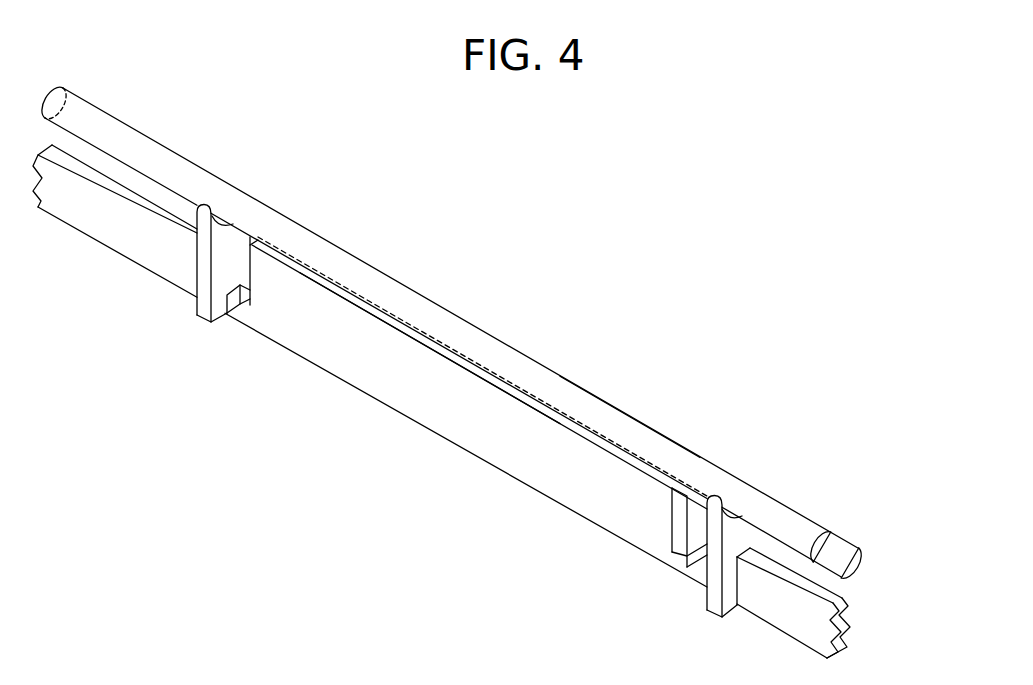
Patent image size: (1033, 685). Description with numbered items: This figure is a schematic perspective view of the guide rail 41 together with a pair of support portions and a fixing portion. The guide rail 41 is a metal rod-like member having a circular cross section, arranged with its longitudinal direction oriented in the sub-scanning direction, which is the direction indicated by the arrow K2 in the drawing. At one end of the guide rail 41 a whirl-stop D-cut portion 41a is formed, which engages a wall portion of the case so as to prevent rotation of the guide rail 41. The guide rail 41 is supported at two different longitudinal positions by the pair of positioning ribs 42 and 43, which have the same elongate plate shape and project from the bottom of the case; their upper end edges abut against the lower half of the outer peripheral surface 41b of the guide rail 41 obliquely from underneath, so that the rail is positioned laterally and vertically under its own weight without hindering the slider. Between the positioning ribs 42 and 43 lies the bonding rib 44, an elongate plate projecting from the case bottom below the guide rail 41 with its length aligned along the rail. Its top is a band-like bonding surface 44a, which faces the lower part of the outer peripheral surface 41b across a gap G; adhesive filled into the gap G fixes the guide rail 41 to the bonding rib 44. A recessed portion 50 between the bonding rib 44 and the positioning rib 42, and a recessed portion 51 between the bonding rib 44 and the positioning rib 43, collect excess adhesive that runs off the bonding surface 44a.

The guide rail 41 is at (492, 331).
The D-cut portion 41a is at (841, 556).
The outer peripheral surface 41b is at (623, 428).
The positioning rib 42 is at (228, 255).
The positioning rib 43 is at (746, 535).
The bonding rib 44 is at (487, 412).
The bonding surface 44a is at (530, 403).
The recessed portion 50 is at (242, 295).
The recessed portion 51 is at (700, 532).
The gap G is at (413, 335).
The movement direction K2 is at (782, 305).